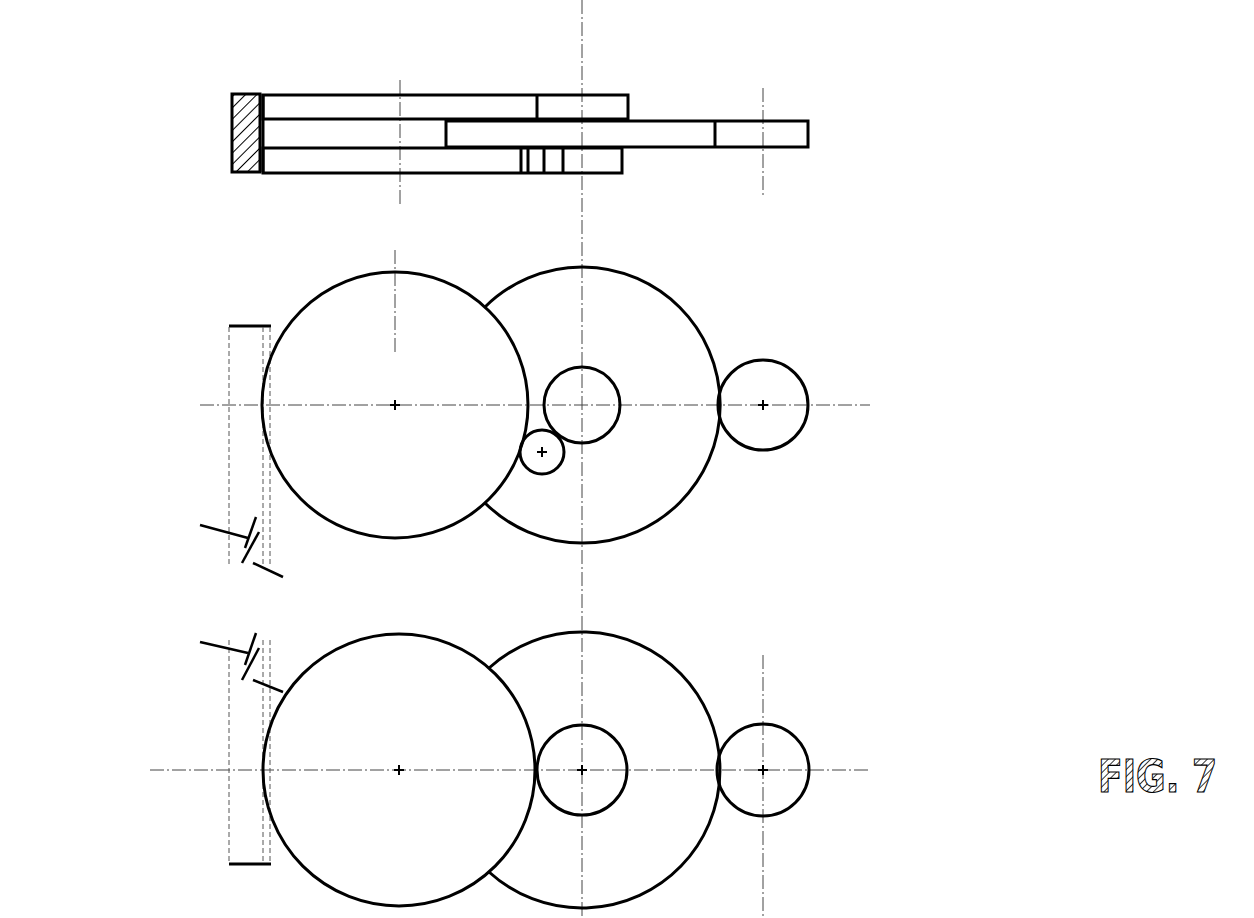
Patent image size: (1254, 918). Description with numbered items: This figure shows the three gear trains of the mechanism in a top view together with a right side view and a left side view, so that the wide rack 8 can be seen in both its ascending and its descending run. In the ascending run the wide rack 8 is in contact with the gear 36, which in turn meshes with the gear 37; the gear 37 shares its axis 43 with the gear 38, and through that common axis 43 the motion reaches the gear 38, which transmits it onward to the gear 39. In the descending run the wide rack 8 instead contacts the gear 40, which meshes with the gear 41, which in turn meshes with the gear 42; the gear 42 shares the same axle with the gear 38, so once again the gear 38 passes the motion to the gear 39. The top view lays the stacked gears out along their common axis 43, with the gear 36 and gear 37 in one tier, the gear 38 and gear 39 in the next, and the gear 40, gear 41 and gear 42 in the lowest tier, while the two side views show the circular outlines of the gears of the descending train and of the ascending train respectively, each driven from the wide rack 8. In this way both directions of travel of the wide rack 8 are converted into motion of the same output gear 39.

The wide rack 8 is at (246, 89).
The gear 36 is at (445, 500).
The gear 37 is at (582, 455).
The gear 38 is at (627, 514).
The gear 39 is at (762, 468).
The gear 40 is at (442, 343).
The gear 41 is at (556, 164).
The gear 42 is at (582, 295).
The axis 43 is at (583, 78).